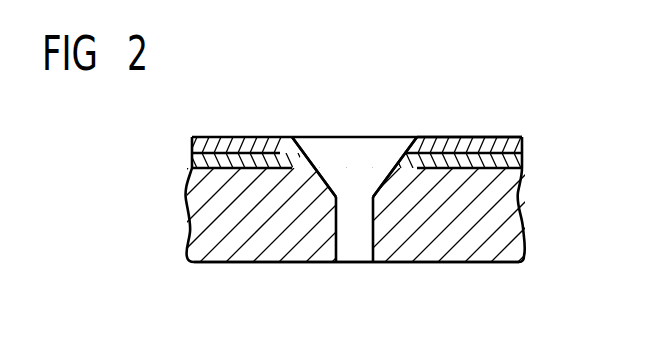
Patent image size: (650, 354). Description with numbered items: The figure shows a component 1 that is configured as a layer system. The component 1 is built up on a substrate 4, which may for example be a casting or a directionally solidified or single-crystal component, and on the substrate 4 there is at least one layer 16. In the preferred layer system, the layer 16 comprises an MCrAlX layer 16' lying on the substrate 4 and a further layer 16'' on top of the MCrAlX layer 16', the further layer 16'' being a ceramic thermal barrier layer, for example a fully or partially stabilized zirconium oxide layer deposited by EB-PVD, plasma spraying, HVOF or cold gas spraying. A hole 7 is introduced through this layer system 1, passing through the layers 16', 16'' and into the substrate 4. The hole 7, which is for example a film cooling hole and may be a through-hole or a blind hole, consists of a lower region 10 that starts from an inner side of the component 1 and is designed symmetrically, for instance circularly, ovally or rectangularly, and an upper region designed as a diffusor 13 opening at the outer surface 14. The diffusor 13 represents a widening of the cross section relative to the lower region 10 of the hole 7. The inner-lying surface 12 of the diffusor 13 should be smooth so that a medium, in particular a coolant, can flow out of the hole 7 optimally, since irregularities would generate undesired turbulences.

The component 1 is at (157, 258).
The substrate 4 is at (497, 220).
The hole 7 is at (355, 151).
The lower region 10 is at (357, 246).
The inner-lying surface 12 is at (404, 149).
The diffusor 13 is at (319, 149).
The outer surface 14 is at (488, 137).
The layer 16 is at (370, 134).
The MCrAlX layer 16' is at (398, 158).
The thermal barrier layer 16'' is at (388, 121).